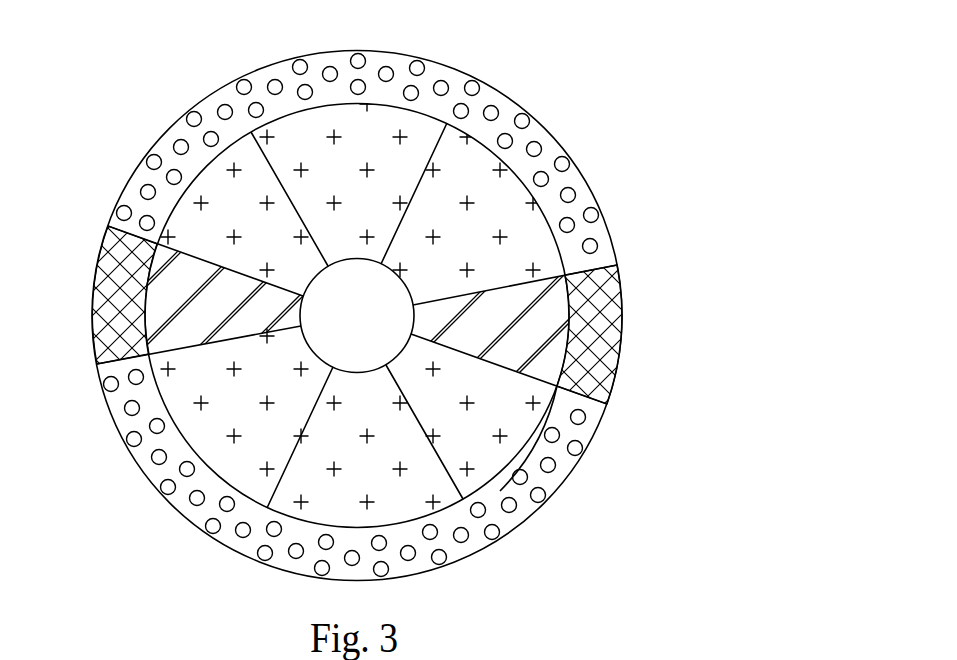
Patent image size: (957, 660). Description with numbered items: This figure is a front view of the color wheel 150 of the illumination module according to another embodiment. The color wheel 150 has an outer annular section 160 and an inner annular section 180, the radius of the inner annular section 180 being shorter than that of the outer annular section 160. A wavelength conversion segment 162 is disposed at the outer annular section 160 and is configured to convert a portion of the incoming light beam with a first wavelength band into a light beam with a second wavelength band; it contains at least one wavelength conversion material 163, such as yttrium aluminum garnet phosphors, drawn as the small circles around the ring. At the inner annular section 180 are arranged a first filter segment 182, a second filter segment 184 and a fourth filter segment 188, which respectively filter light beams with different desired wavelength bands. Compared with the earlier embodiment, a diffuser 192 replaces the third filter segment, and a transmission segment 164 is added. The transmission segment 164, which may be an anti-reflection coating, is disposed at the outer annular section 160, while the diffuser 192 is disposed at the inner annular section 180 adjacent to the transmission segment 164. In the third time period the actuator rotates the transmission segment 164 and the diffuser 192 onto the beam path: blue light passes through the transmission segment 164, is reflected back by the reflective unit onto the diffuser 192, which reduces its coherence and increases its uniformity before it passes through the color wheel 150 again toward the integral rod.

The color wheel 150 is at (61, 54).
The outer annular section 160 is at (594, 236).
The wavelength conversion segment 162 is at (570, 182).
The wavelength conversion material 163 is at (535, 148).
The transmission segment 164 is at (136, 308).
The inner annular section 180 is at (556, 341).
The first filter segment 182 is at (388, 210).
The second filter segment 184 is at (489, 246).
The fourth filter segment 188 is at (281, 246).
The diffuser 192 is at (229, 318).